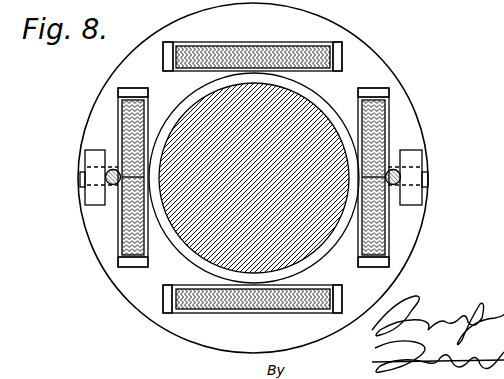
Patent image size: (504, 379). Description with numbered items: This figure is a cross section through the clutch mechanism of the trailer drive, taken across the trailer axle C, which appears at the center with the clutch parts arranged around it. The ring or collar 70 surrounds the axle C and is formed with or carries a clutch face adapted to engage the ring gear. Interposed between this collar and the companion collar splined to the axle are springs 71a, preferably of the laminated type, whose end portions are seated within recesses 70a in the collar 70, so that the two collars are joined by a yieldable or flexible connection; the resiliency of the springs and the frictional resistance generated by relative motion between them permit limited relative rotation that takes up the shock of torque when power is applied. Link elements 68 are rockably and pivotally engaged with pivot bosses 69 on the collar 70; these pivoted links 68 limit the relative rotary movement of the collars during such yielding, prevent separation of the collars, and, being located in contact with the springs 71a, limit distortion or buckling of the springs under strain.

The ring or collar 70 is at (344, 32).
The recesses 70a is at (343, 62).
The springs 71a is at (132, 102).
The pivot bosses 69 is at (92, 198).
The link elements 68 is at (116, 193).
The trailer axle C is at (194, 251).